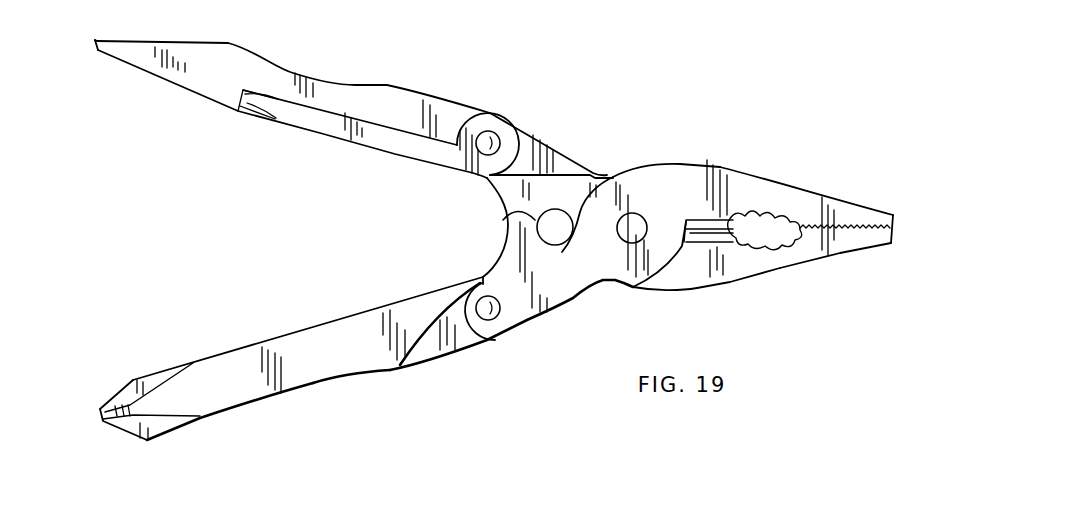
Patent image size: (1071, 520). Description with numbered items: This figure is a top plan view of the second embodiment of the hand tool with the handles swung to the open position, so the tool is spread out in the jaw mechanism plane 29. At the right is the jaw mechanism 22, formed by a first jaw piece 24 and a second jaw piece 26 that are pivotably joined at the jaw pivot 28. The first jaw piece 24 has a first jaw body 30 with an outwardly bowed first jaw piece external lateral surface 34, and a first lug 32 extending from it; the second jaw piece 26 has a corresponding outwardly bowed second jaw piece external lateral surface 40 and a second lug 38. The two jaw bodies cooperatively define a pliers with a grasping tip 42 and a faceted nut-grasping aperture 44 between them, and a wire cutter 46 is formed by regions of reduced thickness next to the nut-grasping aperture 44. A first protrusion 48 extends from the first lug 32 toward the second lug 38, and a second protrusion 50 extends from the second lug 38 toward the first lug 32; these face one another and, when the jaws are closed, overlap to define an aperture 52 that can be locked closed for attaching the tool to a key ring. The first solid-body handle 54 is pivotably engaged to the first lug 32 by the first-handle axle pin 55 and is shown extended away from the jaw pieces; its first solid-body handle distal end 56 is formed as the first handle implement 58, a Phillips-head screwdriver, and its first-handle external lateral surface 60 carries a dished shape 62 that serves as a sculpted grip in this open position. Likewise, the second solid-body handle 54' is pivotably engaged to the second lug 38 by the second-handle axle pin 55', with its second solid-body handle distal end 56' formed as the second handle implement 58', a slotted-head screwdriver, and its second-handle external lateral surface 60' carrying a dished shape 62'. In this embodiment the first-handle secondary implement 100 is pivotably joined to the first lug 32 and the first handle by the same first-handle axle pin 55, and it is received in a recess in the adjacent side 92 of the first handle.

The jaw mechanism 22 is at (840, 258).
The first jaw piece 24 is at (823, 203).
The second jaw piece 26 is at (777, 265).
The jaw pivot 28 is at (622, 228).
The jaw mechanism plane 29 is at (357, 267).
The first jaw body 30 is at (850, 207).
The first lug 32 is at (523, 320).
The first jaw piece external lateral surface 34 is at (750, 170).
The second lug 38 is at (547, 152).
The second jaw piece external lateral surface 40 is at (697, 288).
The grasping tip 42 is at (895, 217).
The faceted nut-grasping aperture 44 is at (809, 230).
The wire cutter 46 is at (696, 218).
The first protrusion 48 is at (517, 225).
The second protrusion 50 is at (505, 218).
The aperture 52 is at (542, 212).
The first solid-body handle 54 is at (292, 114).
The first-handle axle pin 55 is at (499, 130).
The first solid-body handle distal end 56 is at (174, 40).
The first handle implement 58 is at (140, 39).
The first-handle external lateral surface 60 is at (307, 54).
The dished shape 62 is at (392, 92).
The adjacent side 92 is at (287, 333).
The first-handle secondary implement 100 is at (337, 130).
The second solid-body handle 54' is at (509, 345).
The second-handle axle pin 55' is at (493, 330).
The second solid-body handle distal end 56' is at (146, 373).
The second handle implement 58' is at (149, 443).
The second-handle external lateral surface 60' is at (230, 419).
The dished shape 62' is at (351, 401).